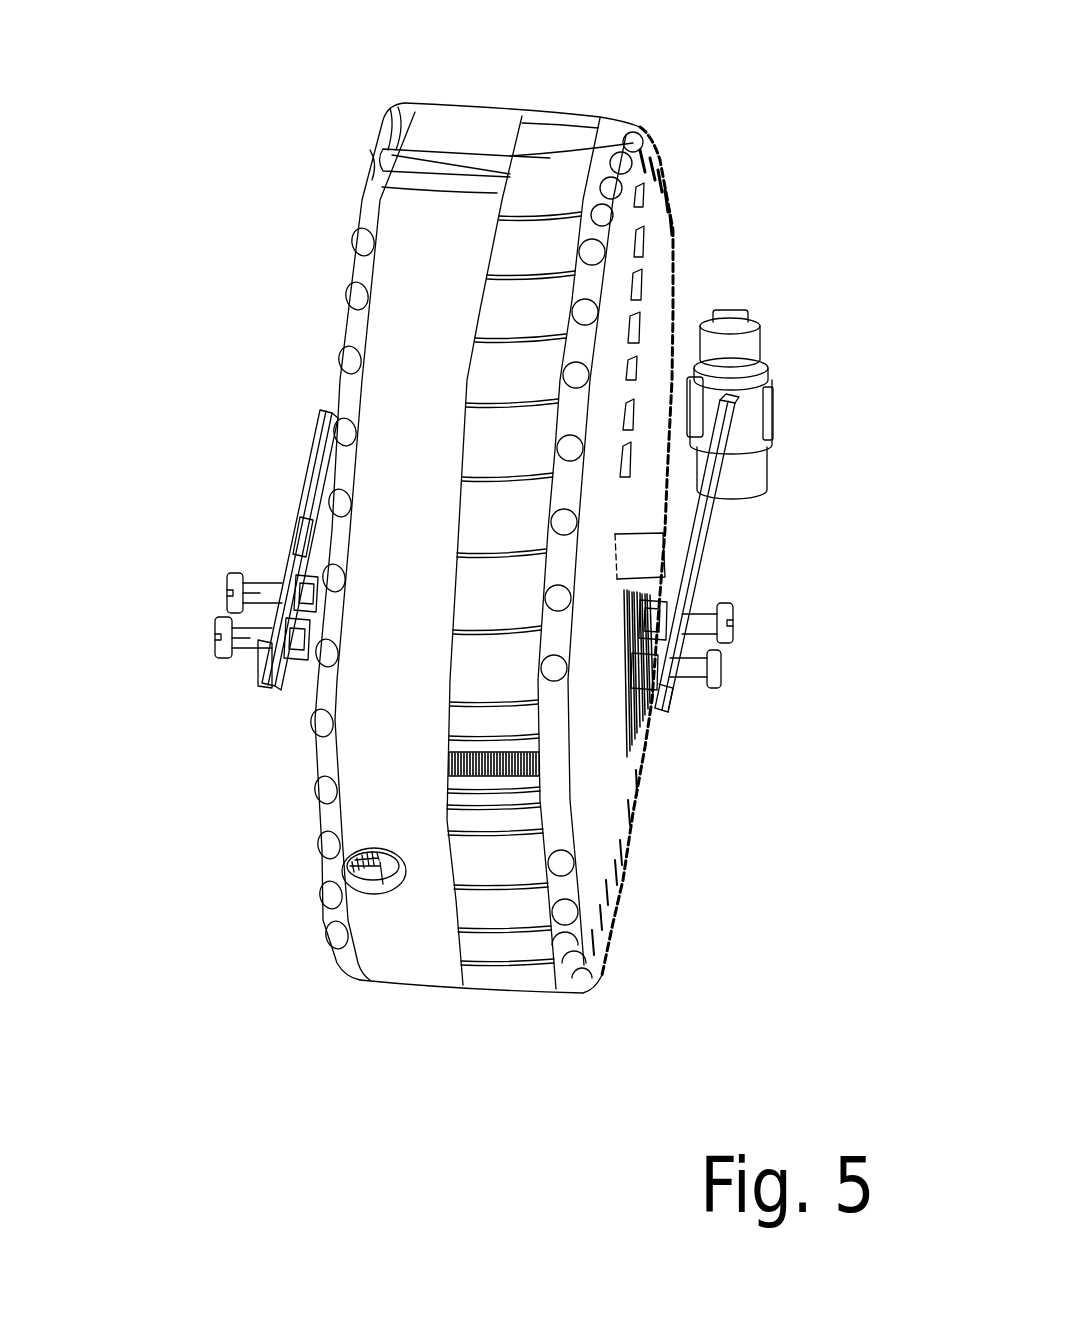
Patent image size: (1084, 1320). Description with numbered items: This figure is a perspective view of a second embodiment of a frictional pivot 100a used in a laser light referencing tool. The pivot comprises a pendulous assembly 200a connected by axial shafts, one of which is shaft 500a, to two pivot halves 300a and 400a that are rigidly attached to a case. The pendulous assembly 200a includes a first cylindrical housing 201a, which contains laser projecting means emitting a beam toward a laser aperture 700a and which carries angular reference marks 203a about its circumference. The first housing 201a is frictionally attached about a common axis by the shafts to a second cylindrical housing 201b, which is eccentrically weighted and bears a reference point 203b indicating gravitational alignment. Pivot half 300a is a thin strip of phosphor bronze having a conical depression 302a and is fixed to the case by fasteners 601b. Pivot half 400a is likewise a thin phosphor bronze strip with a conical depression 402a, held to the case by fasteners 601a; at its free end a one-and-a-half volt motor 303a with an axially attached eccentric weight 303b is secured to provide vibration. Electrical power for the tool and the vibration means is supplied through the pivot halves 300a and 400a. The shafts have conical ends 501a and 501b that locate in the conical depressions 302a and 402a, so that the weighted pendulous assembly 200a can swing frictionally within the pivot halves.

The frictional pivot 100a is at (213, 255).
The pendulous assembly 200a is at (440, 1050).
The first cylindrical housing 201a is at (540, 998).
The second cylindrical housing 201b is at (377, 988).
The angular reference marks 203a is at (577, 213).
The reference point 203b is at (408, 160).
The pivot half 300a is at (293, 468).
The conical depression 302a is at (275, 537).
The 1.5 volt motor 303a is at (767, 362).
The eccentric weight 303b is at (740, 297).
The pivot half 400a is at (720, 478).
The conical depression 402a is at (712, 568).
The axial shaft 500a is at (647, 545).
The conical end 501a is at (675, 562).
The conical end 501b is at (310, 527).
The fasteners 601a is at (735, 645).
The fasteners 601b is at (220, 588).
The laser aperture 700a is at (538, 779).